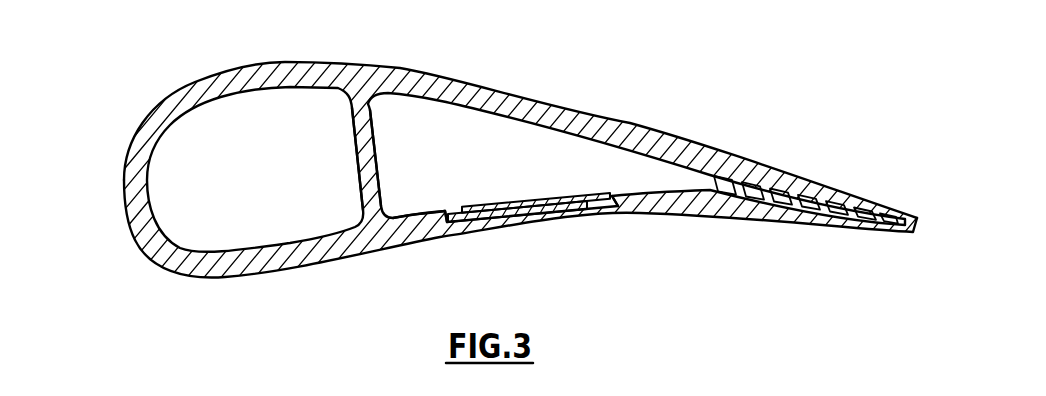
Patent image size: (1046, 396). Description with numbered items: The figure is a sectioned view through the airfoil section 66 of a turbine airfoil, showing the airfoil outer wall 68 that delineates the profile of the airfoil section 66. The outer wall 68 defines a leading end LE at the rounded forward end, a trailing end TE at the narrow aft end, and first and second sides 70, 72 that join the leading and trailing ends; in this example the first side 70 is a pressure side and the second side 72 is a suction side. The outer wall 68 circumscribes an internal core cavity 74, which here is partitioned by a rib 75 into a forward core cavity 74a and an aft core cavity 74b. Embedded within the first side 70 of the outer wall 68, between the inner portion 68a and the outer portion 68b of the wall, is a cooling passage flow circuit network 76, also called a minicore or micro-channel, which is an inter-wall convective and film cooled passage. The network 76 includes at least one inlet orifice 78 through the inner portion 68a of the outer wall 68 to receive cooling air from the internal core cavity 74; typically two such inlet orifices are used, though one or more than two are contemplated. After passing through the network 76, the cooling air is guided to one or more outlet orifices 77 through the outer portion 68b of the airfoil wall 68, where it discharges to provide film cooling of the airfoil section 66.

The airfoil section 66 is at (248, 282).
The airfoil outer wall 68 is at (285, 68).
The inner portion of the airfoil outer wall 68a is at (498, 204).
The outer portion of the airfoil outer wall 68b is at (510, 226).
The first side 70 is at (405, 238).
The second side 72 is at (381, 66).
The internal core cavity 74 is at (604, 176).
The forward core cavity 74a is at (258, 187).
The aft core cavity 74b is at (475, 161).
The rib 75 is at (353, 128).
The cooling passage flow circuit network 76 is at (558, 224).
The outlet orifice 77 is at (603, 207).
The inlet orifice 78 is at (465, 207).
The leading end LE is at (116, 224).
The trailing end TE is at (913, 246).